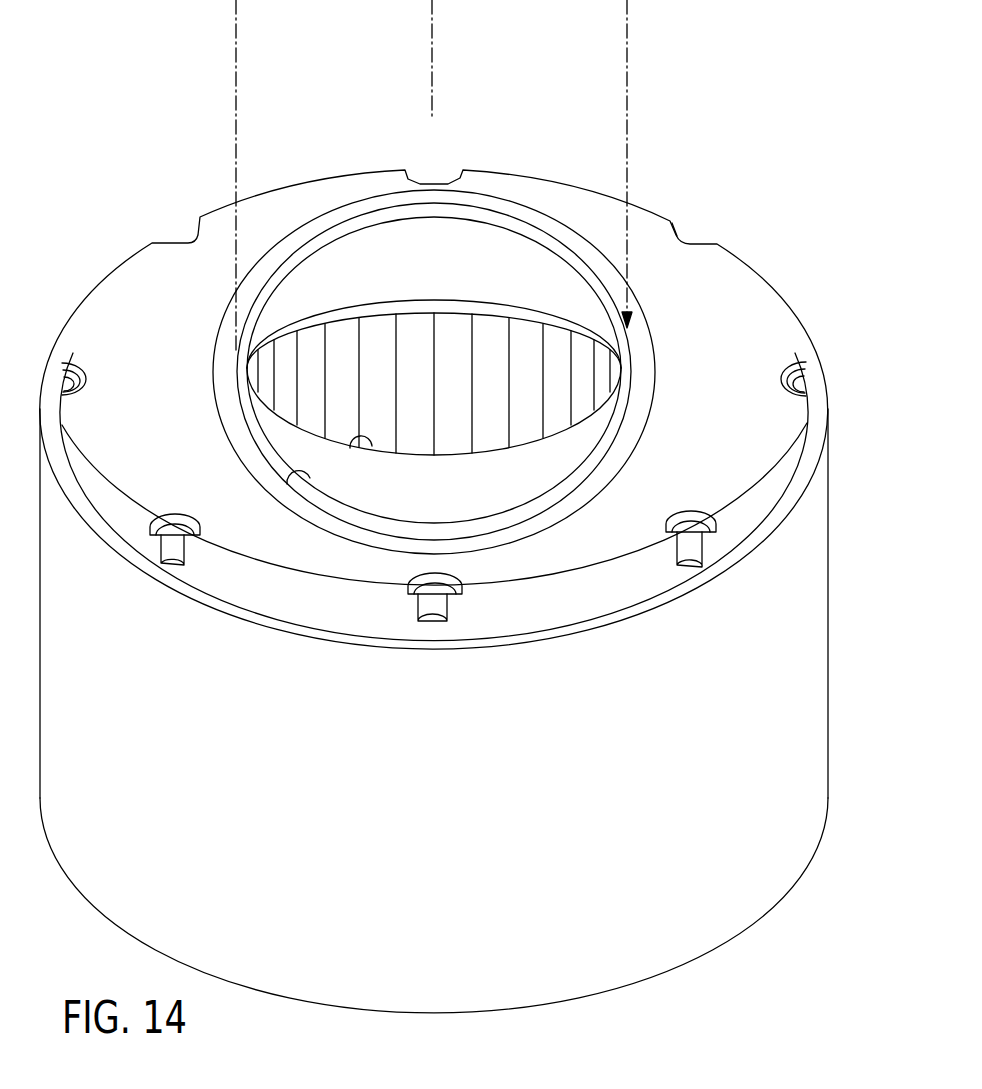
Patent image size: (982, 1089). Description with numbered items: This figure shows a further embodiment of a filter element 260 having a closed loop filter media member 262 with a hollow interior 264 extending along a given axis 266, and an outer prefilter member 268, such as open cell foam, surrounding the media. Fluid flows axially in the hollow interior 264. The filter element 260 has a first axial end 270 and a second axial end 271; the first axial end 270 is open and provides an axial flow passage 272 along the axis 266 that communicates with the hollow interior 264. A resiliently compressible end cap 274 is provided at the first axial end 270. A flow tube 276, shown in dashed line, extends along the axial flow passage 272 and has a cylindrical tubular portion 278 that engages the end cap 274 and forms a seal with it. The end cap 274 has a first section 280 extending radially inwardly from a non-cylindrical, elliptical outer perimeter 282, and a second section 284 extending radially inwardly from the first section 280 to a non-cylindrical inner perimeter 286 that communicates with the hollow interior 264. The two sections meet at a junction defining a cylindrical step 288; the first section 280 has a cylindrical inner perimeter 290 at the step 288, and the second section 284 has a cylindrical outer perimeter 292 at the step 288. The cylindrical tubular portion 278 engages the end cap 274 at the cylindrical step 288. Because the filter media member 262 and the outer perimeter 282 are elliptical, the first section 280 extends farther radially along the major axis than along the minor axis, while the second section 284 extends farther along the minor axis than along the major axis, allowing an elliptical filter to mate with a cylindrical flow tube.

The filter element 260 is at (70, 273).
The filter media member 262 is at (258, 364).
The hollow interior 264 is at (343, 348).
The given axis 266 is at (435, 60).
The outer prefilter member 268 is at (47, 427).
The first axial end 270 is at (830, 440).
The second axial end 271 is at (802, 875).
The axial flow passage 272 is at (470, 357).
The end cap 274 is at (727, 250).
The flow tube 276 is at (630, 52).
The tubular portion 278 is at (634, 322).
The first section 280 is at (780, 340).
The outer perimeter 282 is at (760, 273).
The second section 284 is at (497, 498).
The inner perimeter 286 is at (373, 457).
The step 288 is at (617, 448).
The inner perimeter 290 is at (650, 417).
The outer perimeter 292 is at (287, 474).